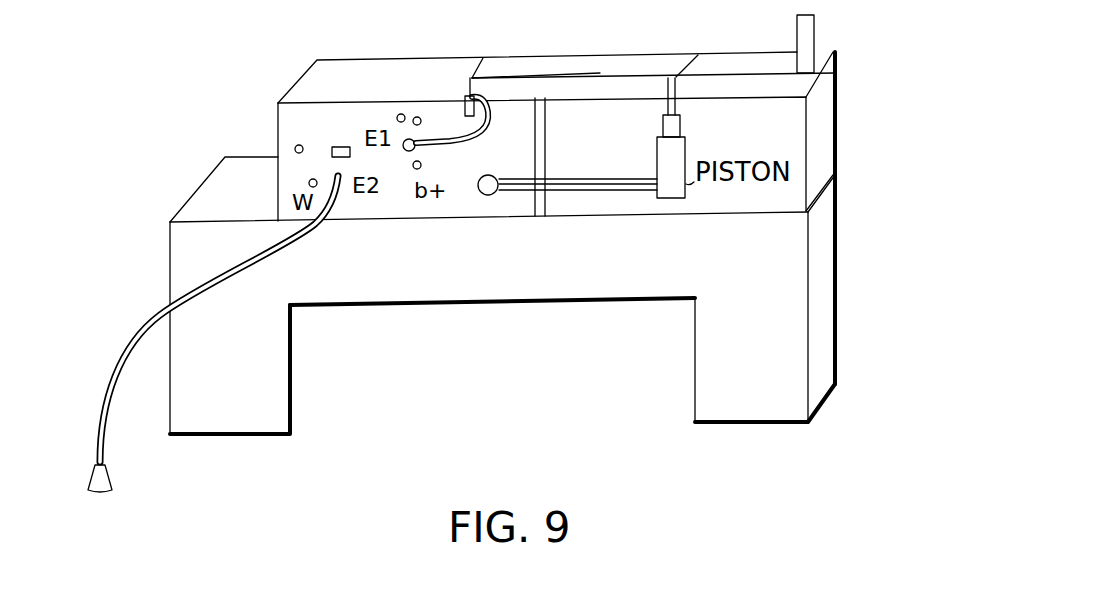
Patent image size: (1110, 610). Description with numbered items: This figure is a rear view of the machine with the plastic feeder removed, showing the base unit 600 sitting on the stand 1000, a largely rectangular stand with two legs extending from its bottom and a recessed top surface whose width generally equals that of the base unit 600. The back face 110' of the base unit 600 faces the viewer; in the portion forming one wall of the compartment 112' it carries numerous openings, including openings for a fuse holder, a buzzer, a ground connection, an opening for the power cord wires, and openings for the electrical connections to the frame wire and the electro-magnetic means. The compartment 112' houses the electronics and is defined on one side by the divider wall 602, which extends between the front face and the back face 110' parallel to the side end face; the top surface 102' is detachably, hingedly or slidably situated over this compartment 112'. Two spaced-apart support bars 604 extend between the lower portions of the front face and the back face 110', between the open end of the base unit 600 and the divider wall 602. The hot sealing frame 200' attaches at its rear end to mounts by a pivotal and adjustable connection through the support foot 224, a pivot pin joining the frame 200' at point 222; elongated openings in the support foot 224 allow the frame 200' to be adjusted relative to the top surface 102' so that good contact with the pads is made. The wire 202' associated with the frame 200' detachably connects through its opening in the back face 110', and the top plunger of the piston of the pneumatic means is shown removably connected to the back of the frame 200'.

The top surface 102' is at (555, 115).
The compartment 112' is at (537, 56).
The divider wall 602 is at (443, 116).
The pivot point 222 is at (462, 66).
The support foot 224 is at (472, 78).
The hot sealing frame 200' is at (735, 102).
The wire 202' is at (492, 123).
The back face 110' is at (578, 157).
The support bars 604 is at (482, 191).
The base unit 600 is at (700, 222).
The stand 1000 is at (763, 345).